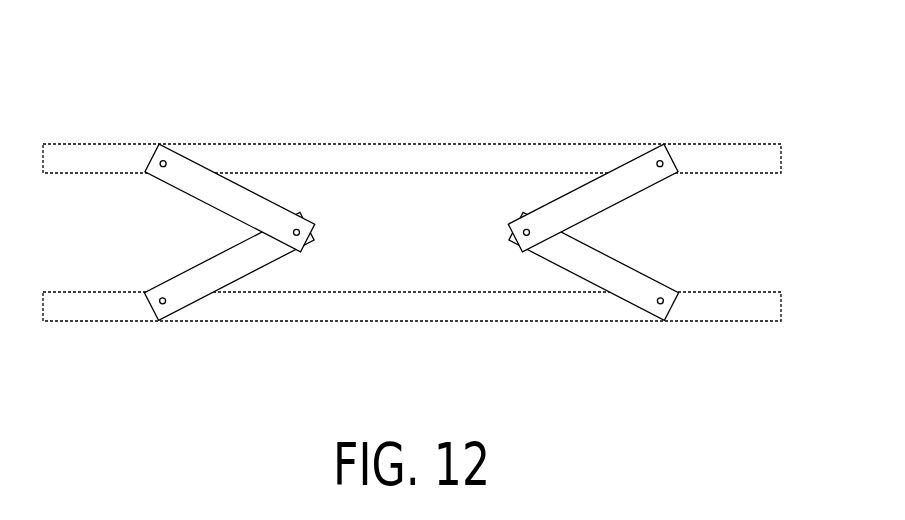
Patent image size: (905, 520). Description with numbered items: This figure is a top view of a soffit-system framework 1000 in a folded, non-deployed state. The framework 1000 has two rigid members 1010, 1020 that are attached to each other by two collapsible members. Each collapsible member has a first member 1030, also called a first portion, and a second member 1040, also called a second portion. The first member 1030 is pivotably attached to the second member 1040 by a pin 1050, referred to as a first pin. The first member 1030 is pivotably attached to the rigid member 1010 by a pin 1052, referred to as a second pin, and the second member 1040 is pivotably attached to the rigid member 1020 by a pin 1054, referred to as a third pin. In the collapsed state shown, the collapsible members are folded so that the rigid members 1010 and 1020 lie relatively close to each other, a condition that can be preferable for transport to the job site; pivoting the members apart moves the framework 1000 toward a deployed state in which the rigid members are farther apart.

The framework 1000 is at (443, 205).
The rigid member 1010 is at (405, 156).
The rigid member 1020 is at (412, 305).
The first member 1030 is at (230, 200).
The second member 1040 is at (228, 268).
The pin 1050 is at (510, 237).
The pin 1052 is at (163, 160).
The pin 1054 is at (164, 304).